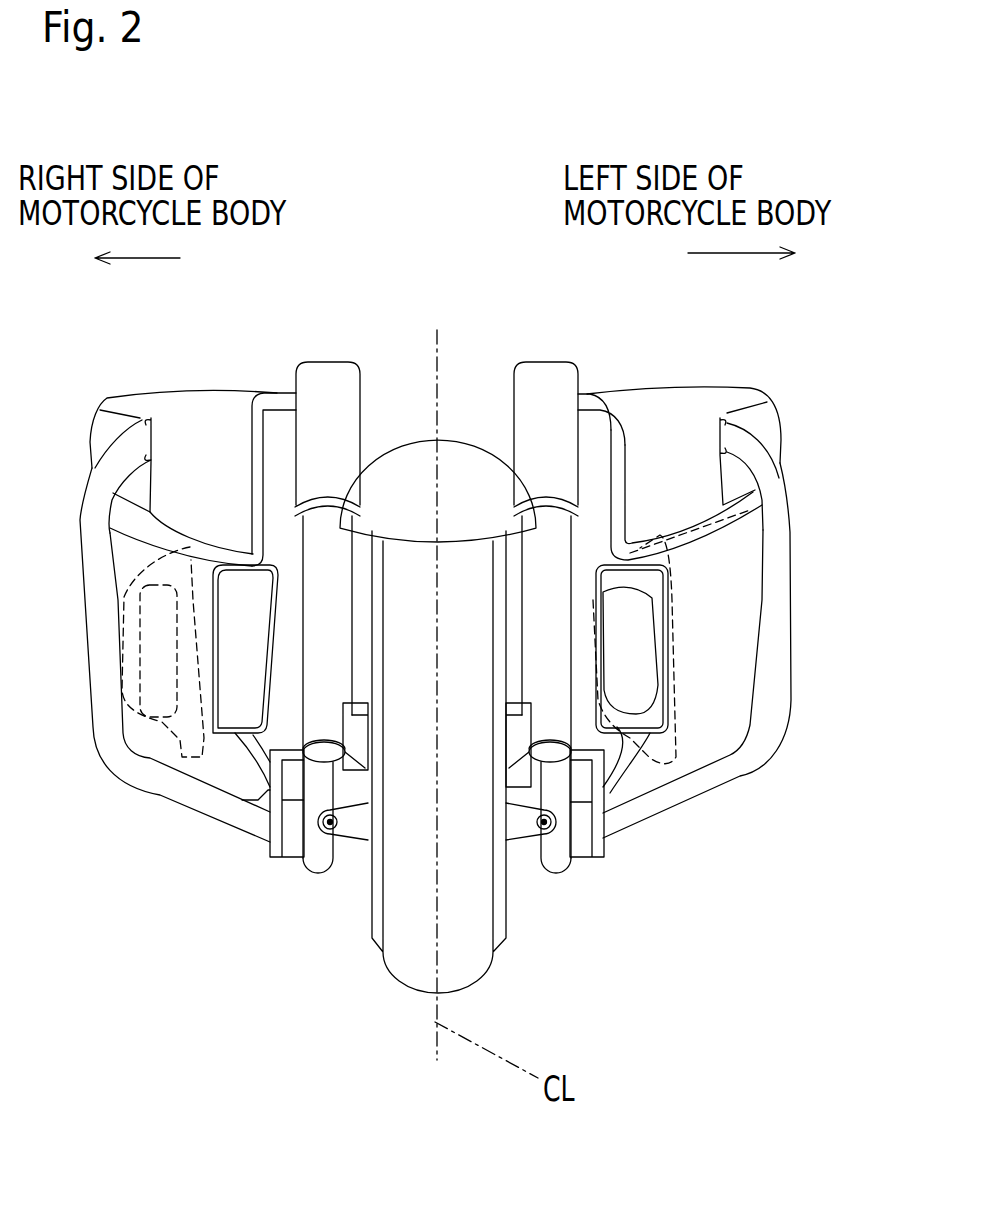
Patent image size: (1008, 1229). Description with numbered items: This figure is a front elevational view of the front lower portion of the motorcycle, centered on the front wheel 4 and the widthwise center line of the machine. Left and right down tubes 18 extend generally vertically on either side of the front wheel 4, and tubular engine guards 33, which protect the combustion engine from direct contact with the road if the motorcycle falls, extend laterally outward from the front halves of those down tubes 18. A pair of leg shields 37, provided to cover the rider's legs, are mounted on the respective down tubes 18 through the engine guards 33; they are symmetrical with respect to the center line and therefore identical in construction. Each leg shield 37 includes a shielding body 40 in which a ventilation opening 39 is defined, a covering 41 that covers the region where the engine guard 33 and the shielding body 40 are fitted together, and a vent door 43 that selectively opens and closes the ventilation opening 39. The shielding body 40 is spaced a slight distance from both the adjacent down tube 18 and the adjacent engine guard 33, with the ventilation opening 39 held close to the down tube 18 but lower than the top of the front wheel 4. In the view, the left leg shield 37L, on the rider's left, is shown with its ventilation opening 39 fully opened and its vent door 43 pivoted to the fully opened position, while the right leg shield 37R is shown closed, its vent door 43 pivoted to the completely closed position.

The front wheel 4 is at (400, 985).
The down tube 18 is at (318, 874).
The engine guard 33 is at (120, 730).
The leg shield 37 is at (431, 600).
The right leg shield 37R is at (188, 378).
The left leg shield 37L is at (674, 378).
The ventilation opening 39 is at (225, 680).
The shielding body 40 is at (107, 398).
The covering 41 is at (88, 450).
The vent door 43 is at (164, 735).